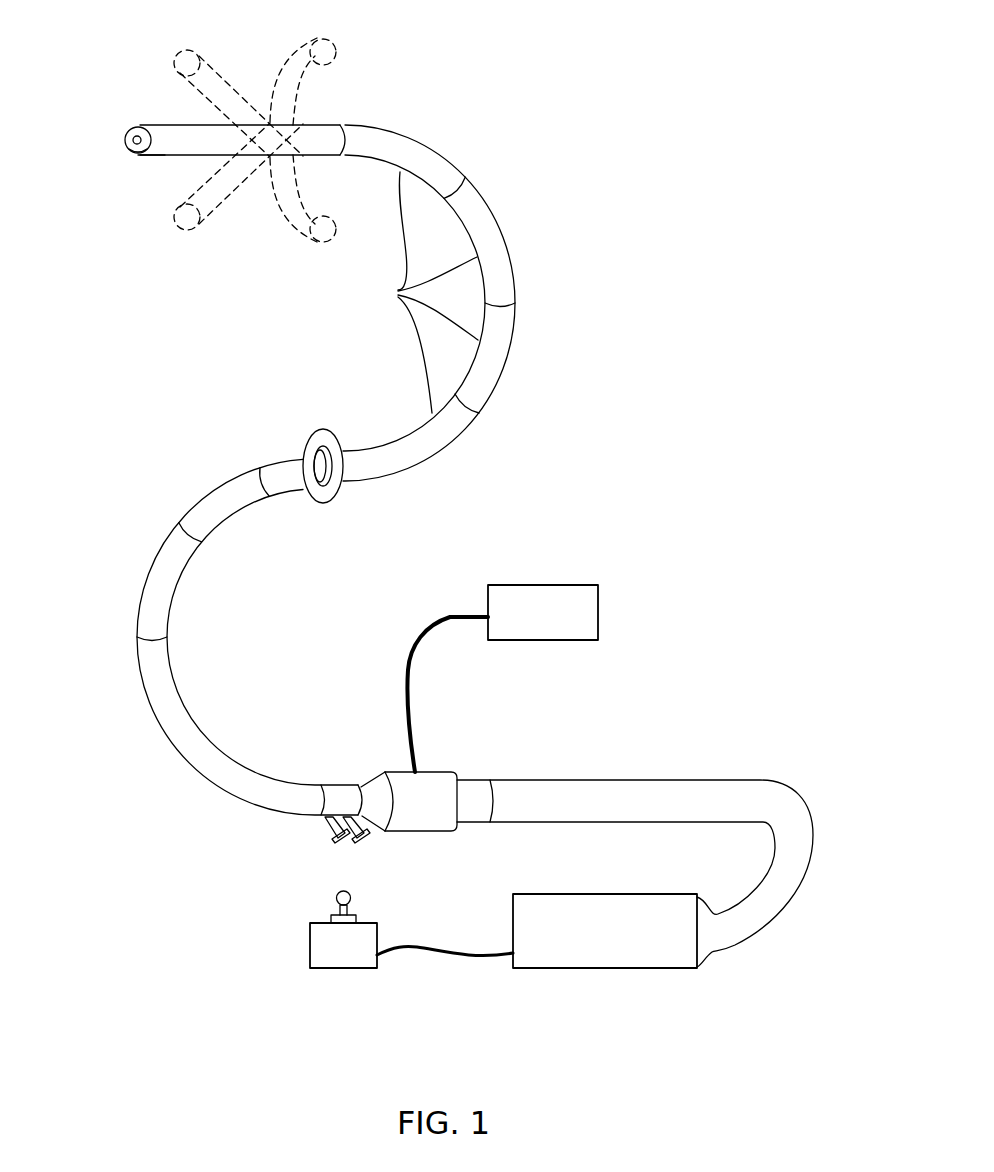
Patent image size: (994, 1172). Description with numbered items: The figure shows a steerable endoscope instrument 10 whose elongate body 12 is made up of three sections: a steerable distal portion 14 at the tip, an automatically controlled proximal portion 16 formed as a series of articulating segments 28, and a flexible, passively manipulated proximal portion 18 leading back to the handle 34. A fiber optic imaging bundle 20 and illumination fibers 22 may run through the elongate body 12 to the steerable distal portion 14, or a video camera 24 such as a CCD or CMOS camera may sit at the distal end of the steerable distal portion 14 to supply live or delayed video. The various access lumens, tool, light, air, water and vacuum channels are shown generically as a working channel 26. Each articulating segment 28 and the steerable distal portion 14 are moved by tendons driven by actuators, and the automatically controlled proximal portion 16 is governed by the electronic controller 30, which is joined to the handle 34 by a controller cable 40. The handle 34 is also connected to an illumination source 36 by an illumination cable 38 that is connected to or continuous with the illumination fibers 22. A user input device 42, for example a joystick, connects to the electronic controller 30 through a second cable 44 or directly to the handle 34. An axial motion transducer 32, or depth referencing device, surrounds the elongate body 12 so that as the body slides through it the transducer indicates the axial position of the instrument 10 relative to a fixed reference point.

The instrument 10 is at (466, 84).
The elongate body 12 is at (525, 350).
The steerable distal portion 14 is at (172, 145).
The automatically controlled proximal portion 16 is at (512, 247).
The flexible and passively manipulated proximal portion 18 is at (151, 689).
The fiber optic imaging bundle 20 is at (135, 128).
The illumination fiber 22 is at (132, 150).
The video camera 24 is at (137, 154).
The working channel 26 is at (129, 138).
The articulating segments 28 is at (425, 292).
The electronic controller 30 is at (653, 970).
The axial motion transducer 32 is at (323, 430).
The handle 34 is at (433, 770).
The illumination source 36 is at (547, 585).
The illumination cable 38 is at (418, 637).
The controller cable 40 is at (650, 780).
The user input device 42 is at (310, 950).
The second cable 44 is at (417, 946).